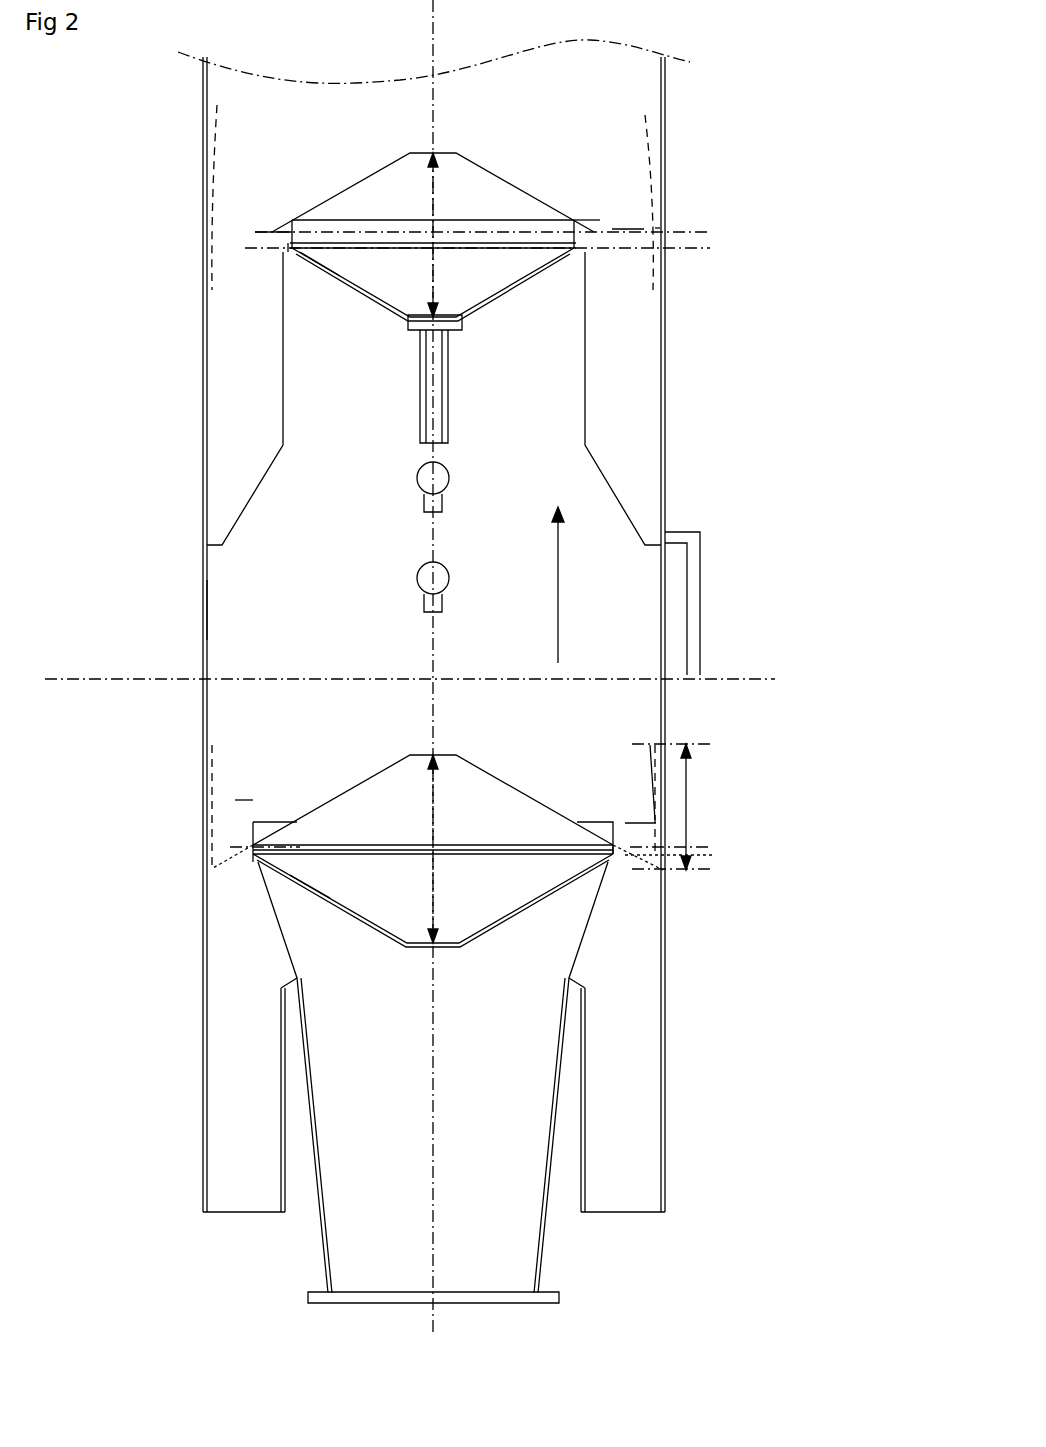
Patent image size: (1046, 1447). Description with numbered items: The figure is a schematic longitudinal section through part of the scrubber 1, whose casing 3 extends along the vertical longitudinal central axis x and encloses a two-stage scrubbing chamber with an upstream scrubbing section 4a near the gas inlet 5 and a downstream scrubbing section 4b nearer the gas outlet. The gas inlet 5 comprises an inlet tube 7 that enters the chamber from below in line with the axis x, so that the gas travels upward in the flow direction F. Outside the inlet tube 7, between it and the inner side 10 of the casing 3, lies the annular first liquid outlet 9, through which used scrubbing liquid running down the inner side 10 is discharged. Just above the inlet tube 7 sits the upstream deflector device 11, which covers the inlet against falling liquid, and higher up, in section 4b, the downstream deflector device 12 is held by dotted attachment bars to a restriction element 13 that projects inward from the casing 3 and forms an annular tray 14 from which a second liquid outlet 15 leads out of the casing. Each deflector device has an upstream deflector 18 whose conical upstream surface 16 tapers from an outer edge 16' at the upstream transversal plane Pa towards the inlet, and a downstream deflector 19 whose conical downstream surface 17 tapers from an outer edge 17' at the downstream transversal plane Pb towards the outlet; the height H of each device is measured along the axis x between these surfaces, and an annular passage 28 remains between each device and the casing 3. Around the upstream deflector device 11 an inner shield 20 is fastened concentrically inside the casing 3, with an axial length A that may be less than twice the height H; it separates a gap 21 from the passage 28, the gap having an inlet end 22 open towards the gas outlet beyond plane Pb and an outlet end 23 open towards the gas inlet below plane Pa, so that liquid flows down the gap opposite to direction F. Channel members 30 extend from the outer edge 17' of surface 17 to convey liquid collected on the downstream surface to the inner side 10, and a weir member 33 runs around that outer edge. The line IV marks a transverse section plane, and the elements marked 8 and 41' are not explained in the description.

The scrubber 1 is at (668, 150).
The casing 3 is at (205, 107).
The upstream scrubbing section 4a is at (502, 649).
The downstream scrubbing section 4b is at (592, 95).
The gas inlet 5 is at (411, 1028).
The inlet tube 7 is at (296, 1048).
The float balls 8 is at (422, 575).
The first liquid outlet 9 is at (245, 1213).
The inner side 10 is at (205, 622).
The upstream deflector device 11 is at (255, 866).
The downstream deflector device 12 is at (255, 232).
The restriction element 13 is at (283, 375).
The annular tray 14 is at (250, 451).
The second liquid outlet 15 is at (683, 532).
The upstream surface 16 is at (216, 610).
The outer edge 16' is at (429, 621).
The downstream surface 17 is at (352, 497).
The outer edge 17' is at (429, 514).
The upstream deflector 18 is at (380, 275).
The downstream deflector 19 is at (350, 203).
The inner shield 20 is at (655, 228).
The gap 21 is at (268, 840).
The inlet end 22 is at (210, 745).
The outlet end 23 is at (655, 848).
The annular passage 28 is at (634, 513).
The channel member 30 is at (628, 846).
The weir member 33 is at (268, 820).
The wall section 41' is at (680, 214).
The height H is at (437, 193).
The upstream transversal plane Pa is at (676, 255).
The downstream transversal plane Pb is at (692, 233).
The axial length A is at (688, 833).
The flow direction F is at (558, 642).
The longitudinal central axis x is at (433, 1072).
The section line IV is at (52, 610).